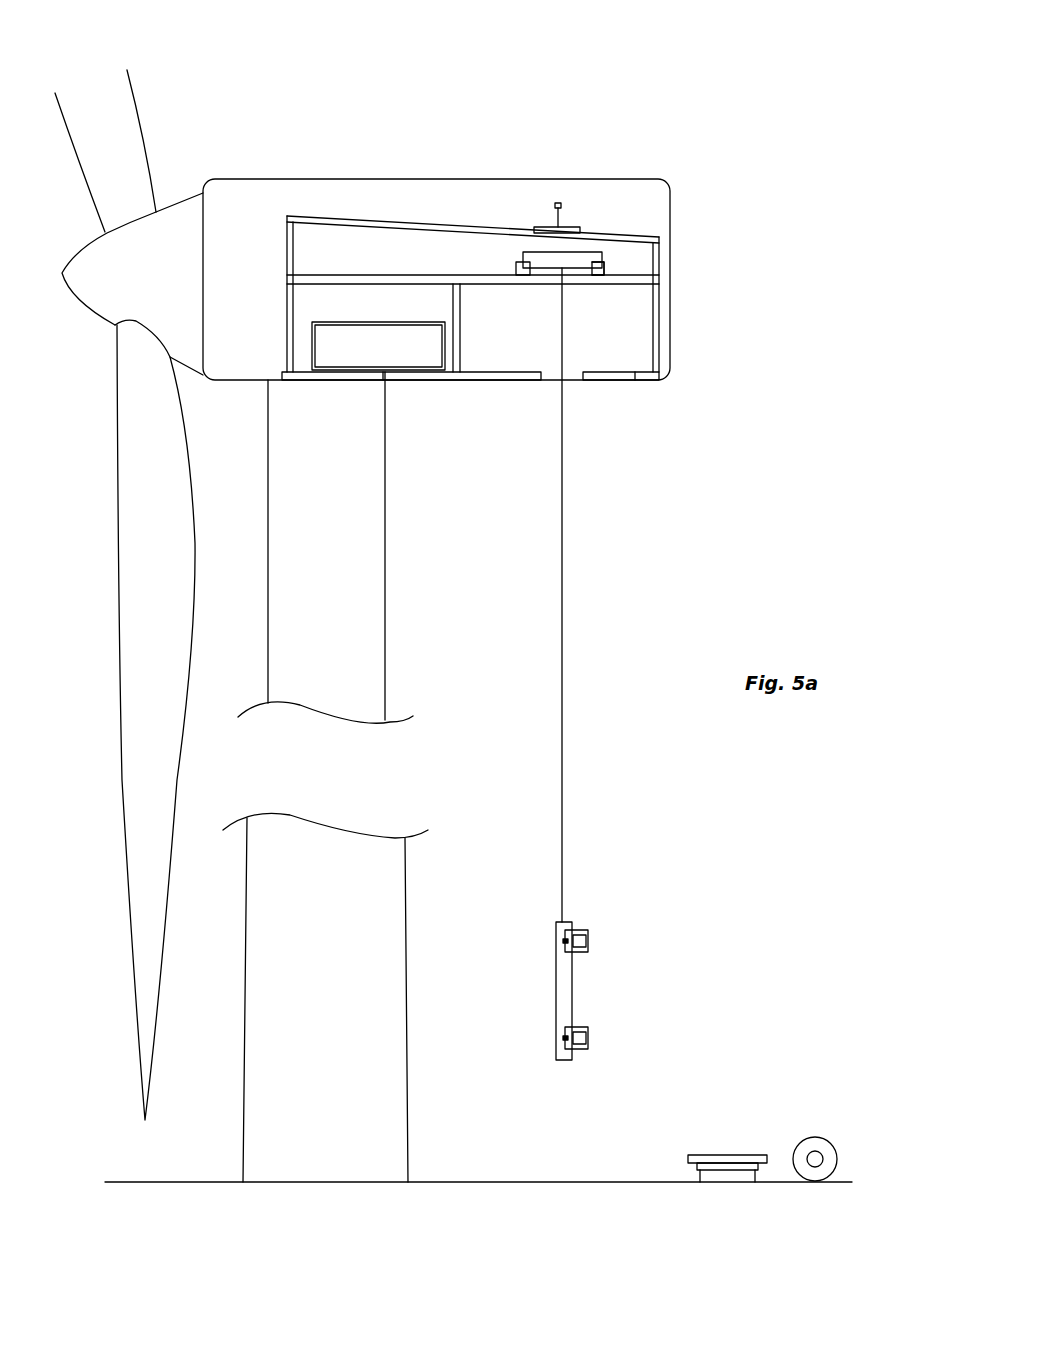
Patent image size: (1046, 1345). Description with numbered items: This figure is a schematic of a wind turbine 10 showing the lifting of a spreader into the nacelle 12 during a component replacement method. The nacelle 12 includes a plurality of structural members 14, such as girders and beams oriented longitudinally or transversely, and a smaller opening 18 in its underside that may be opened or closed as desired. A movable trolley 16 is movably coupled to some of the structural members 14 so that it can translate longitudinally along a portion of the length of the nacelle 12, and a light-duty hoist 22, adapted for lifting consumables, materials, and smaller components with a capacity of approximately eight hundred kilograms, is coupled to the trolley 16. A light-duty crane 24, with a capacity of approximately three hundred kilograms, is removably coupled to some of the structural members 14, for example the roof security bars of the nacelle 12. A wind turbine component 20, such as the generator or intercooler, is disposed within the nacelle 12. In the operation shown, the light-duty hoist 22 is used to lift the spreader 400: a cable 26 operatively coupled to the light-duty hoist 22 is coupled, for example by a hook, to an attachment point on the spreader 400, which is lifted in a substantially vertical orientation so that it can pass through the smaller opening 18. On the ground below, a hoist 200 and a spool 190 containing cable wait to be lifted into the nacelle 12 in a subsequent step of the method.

The wind turbine 10 is at (752, 98).
The nacelle 12 is at (413, 178).
The structural members 14 is at (318, 217).
The movable trolley 16 is at (600, 269).
The smaller opening 18 is at (577, 392).
The wind turbine component 20 is at (396, 355).
The light-duty hoist 22 is at (542, 258).
The light-duty crane 24 is at (578, 230).
The cable 26 is at (563, 650).
The spreader 400 is at (588, 940).
The hoist 200 is at (731, 1153).
The spool 190 is at (820, 1138).